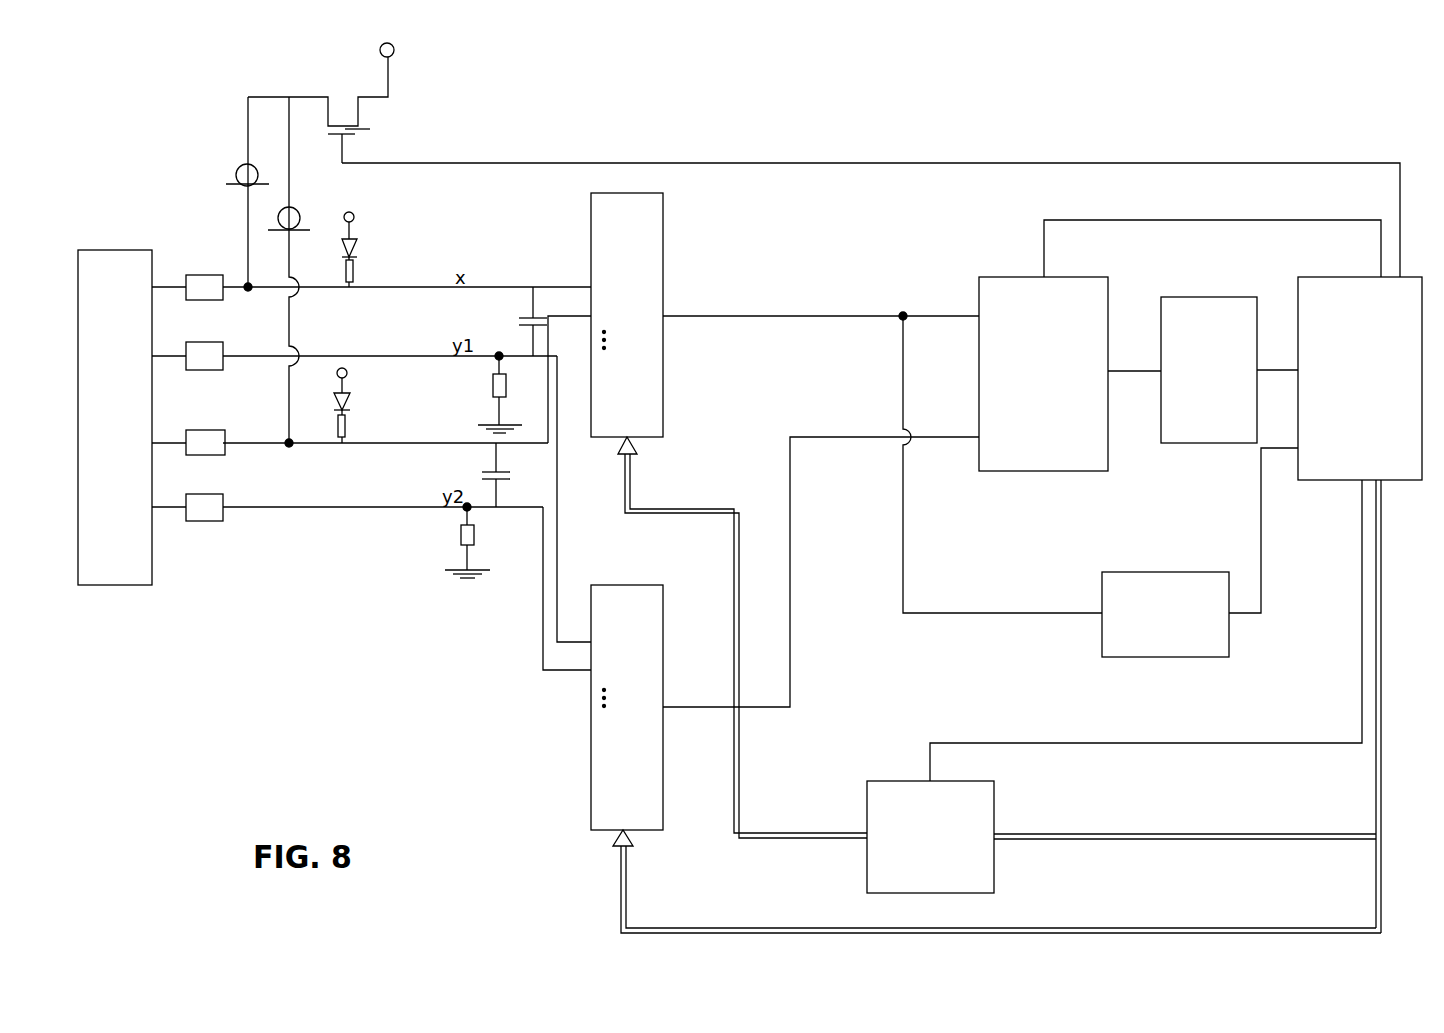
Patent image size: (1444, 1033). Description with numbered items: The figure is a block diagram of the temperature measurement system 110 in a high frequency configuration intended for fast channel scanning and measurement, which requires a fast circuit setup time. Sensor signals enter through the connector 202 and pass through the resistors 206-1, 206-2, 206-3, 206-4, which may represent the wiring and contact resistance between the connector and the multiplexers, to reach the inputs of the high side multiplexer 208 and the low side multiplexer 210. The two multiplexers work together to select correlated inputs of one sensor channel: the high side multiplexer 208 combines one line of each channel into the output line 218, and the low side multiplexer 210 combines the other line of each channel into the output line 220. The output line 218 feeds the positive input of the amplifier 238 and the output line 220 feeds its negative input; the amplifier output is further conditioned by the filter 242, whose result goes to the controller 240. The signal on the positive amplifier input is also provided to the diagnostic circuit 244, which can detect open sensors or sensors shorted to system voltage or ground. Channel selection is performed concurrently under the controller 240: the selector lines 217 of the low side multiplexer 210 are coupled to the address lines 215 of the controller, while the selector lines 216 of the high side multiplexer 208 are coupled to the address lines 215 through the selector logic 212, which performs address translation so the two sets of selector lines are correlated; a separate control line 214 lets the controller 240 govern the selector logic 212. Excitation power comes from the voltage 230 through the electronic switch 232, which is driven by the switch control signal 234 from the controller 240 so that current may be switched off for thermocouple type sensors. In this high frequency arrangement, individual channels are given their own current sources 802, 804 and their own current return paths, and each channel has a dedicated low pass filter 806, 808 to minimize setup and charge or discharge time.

The temperature measurement system 110 is at (1206, 144).
The connector 202 is at (137, 431).
The resistor 206-1 is at (207, 274).
The resistor 206-2 is at (207, 342).
The resistor 206-3 is at (205, 430).
The resistor 206-4 is at (207, 494).
The high side multiplexer 208 is at (647, 267).
The low side multiplexer 210 is at (647, 626).
The selector logic 212 is at (945, 851).
The control line 214 is at (1013, 743).
The address lines 215 is at (1380, 825).
The selector lines 216 is at (753, 838).
The selector lines 217 is at (625, 873).
The output line 218 is at (705, 317).
The output line 220 is at (790, 603).
The voltage 230 is at (394, 55).
The electronic switch 232 is at (370, 129).
The switch control signal 234 is at (660, 163).
The amplifier 238 is at (1062, 401).
The controller 240 is at (1383, 362).
The filter 242 is at (1223, 366).
The diagnostic circuit 244 is at (1185, 631).
The current source 802 is at (237, 172).
The current source 804 is at (298, 210).
The low pass filter 806 is at (557, 288).
The low pass filter 808 is at (498, 480).